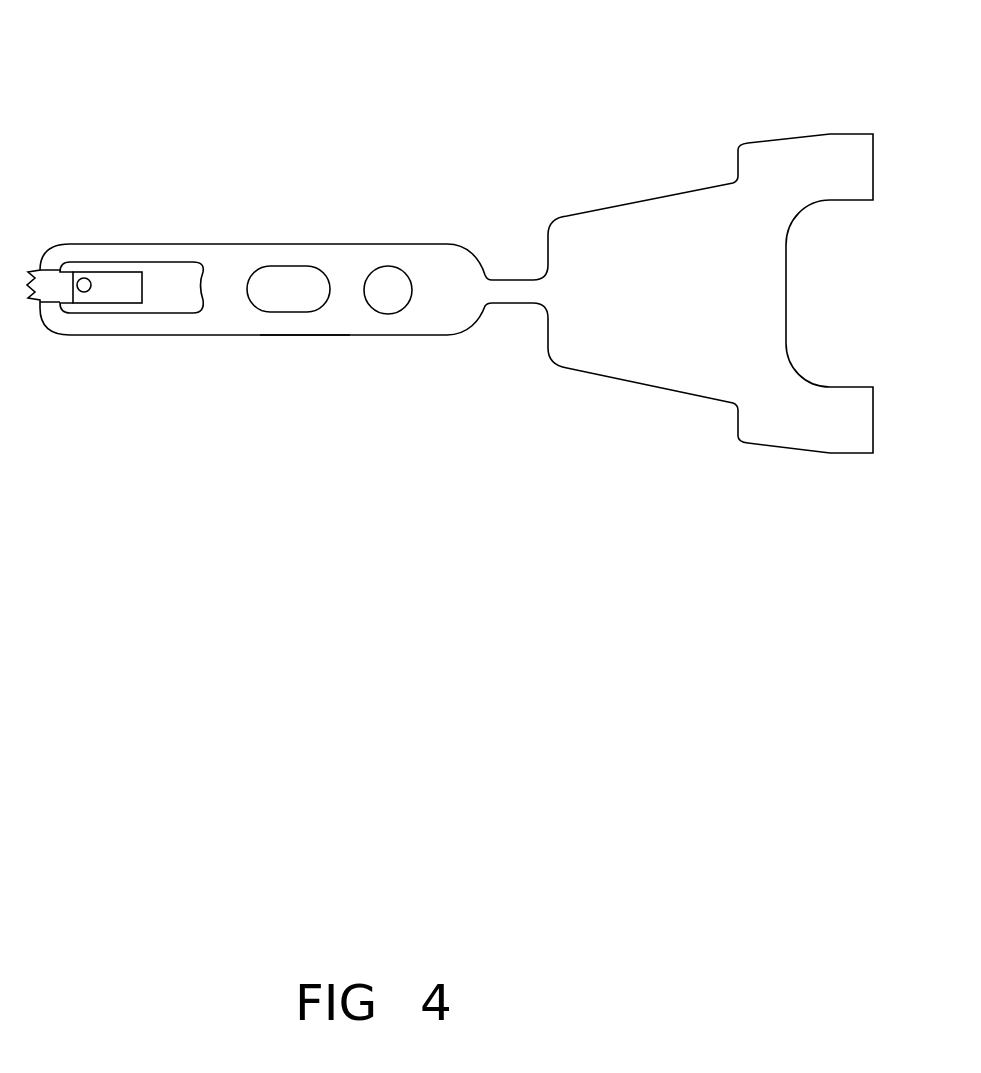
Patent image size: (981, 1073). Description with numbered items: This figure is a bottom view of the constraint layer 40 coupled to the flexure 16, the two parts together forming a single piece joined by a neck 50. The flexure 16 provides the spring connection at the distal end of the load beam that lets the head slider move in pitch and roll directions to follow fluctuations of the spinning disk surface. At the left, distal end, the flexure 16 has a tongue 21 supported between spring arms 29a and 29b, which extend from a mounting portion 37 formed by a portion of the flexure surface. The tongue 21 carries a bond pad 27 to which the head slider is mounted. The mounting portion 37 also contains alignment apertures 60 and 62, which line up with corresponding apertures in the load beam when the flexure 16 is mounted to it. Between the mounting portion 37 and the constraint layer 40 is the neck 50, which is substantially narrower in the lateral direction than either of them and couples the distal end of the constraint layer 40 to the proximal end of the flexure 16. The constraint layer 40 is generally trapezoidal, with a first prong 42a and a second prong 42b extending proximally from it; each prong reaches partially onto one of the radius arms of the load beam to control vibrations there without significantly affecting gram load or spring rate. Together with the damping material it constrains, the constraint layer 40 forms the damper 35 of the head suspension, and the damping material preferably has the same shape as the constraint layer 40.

The flexure 16 is at (177, 340).
The tongue 21 is at (143, 285).
The bond pad 27 is at (84, 278).
The spring arm 29a is at (80, 336).
The spring arm 29b is at (120, 243).
The damper 35 is at (617, 384).
The mounting portion 37 is at (303, 336).
The constraint layer 40 is at (642, 202).
The first prong 42a is at (873, 438).
The second prong 42b is at (873, 148).
The neck 50 is at (511, 280).
The alignment aperture 60 is at (300, 270).
The alignment aperture 62 is at (377, 307).